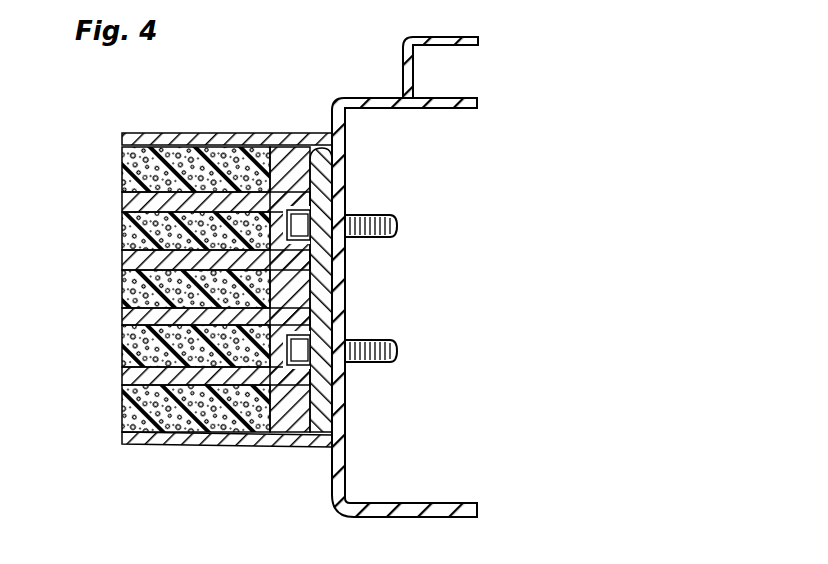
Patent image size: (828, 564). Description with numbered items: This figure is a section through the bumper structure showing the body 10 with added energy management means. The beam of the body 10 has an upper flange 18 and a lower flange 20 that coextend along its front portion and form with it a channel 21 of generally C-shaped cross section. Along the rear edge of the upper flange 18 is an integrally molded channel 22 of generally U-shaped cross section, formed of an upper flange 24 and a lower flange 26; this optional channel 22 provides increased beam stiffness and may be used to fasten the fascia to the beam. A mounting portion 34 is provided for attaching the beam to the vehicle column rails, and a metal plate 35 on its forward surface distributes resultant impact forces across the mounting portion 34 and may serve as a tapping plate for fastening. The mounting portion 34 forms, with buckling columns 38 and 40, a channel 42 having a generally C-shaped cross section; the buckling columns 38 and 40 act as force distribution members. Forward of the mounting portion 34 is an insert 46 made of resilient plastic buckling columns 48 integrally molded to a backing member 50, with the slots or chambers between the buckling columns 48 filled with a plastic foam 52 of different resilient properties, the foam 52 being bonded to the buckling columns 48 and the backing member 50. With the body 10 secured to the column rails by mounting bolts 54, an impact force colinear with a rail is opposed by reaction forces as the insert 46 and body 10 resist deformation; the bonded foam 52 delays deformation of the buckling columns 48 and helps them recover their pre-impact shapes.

The body 10 is at (313, 490).
The upper flange 18 is at (358, 98).
The lower flange 20 is at (418, 503).
The channel 21 is at (456, 262).
The channel 22 is at (465, 63).
The upper flange 24 is at (450, 37).
The lower flange 26 is at (470, 98).
The mounting portion 34 is at (350, 282).
The metal plate 35 is at (330, 402).
The buckling column 38 is at (220, 133).
The buckling column 40 is at (215, 447).
The channel 42 is at (308, 100).
The insert 46 is at (175, 295).
The buckling column 48 is at (120, 200).
The backing member 50 is at (285, 448).
The plastic foam 52 is at (120, 232).
The mounting bolt 54 is at (375, 213).